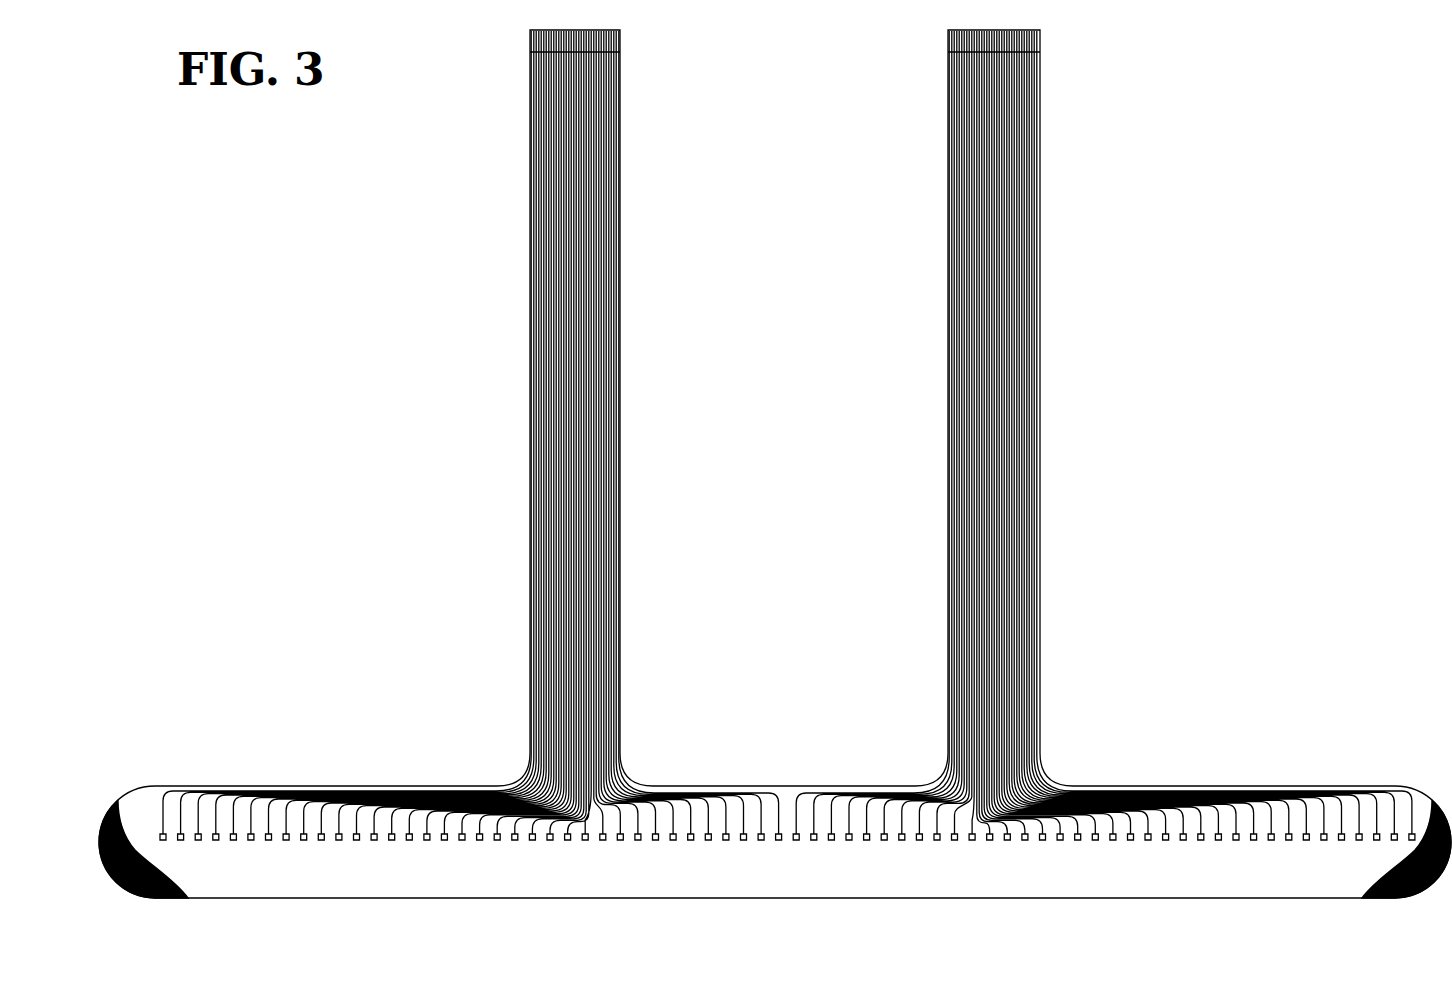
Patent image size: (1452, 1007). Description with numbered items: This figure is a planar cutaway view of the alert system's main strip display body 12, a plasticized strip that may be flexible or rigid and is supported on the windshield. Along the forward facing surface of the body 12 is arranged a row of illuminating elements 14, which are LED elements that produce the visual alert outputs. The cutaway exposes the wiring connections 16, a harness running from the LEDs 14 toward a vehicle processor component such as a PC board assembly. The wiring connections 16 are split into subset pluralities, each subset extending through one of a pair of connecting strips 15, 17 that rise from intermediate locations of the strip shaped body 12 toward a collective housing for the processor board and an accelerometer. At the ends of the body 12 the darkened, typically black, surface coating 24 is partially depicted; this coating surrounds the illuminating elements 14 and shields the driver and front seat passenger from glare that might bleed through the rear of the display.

The main strip display body 12 is at (455, 880).
The illuminating elements 14 is at (797, 843).
The connecting strip 15 is at (530, 428).
The wiring connections 16 is at (808, 800).
The connecting strip 17 is at (948, 462).
The darkened surface coating 24 is at (152, 899).